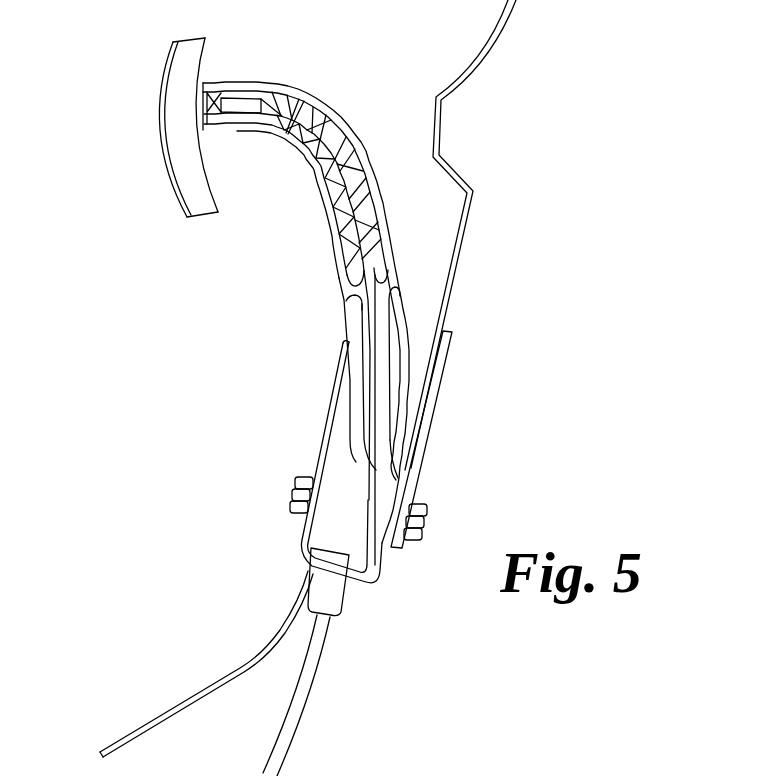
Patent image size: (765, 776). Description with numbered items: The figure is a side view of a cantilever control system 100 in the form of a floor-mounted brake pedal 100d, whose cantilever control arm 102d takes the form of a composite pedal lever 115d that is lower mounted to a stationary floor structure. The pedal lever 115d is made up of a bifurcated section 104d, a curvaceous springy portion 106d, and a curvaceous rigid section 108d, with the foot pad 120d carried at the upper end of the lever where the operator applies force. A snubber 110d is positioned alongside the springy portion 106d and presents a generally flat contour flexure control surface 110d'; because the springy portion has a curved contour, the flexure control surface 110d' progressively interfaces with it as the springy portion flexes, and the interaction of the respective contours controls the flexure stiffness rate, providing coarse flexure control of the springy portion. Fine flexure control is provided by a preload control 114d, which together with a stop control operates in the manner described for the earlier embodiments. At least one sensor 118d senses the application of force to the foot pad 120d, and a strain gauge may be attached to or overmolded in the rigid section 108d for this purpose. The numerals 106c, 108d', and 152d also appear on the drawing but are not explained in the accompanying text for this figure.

The cantilever control system 100 is at (193, 328).
The brake pedal 100d is at (215, 601).
The cantilever control arm 102d is at (296, 271).
The composite pedal lever 115d is at (244, 197).
The bifurcated section 104d is at (331, 433).
The outer shell wall 106c is at (360, 111).
The curvaceous springy portion 106d is at (336, 387).
The curvaceous rigid section 108d is at (308, 378).
The wire mount frame 108d' is at (244, 134).
The snubber 110d is at (322, 385).
The flexure control surface 110d' is at (448, 439).
The preload control 114d is at (303, 463).
The sensor 118d is at (237, 88).
The foot pad 120d is at (163, 157).
The rib 152d is at (395, 289).